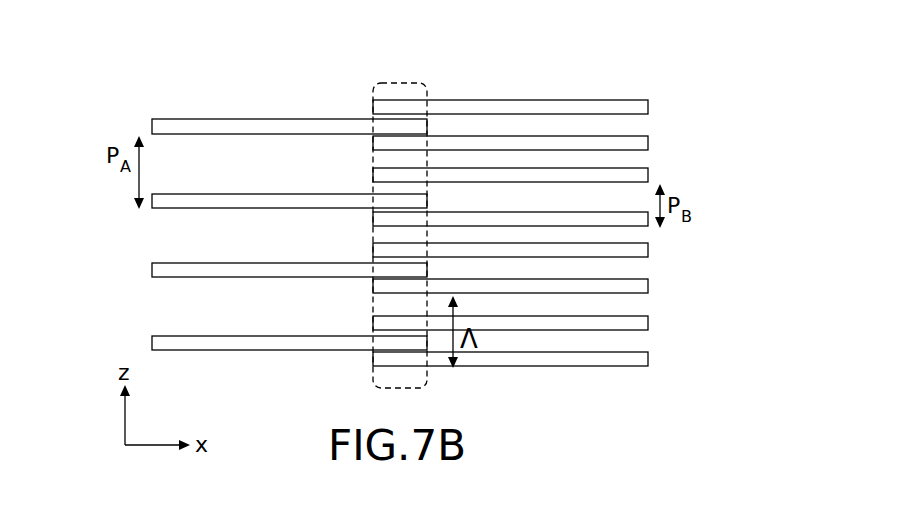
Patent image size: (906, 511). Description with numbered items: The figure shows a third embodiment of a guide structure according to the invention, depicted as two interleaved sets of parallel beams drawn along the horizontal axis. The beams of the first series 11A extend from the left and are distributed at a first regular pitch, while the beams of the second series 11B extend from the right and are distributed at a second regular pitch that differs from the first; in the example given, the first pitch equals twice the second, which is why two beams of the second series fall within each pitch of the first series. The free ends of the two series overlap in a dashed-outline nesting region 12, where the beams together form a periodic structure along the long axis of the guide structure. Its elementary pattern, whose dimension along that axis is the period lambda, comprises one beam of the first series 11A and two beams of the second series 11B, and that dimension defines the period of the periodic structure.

The first series of beams 11A is at (88, 120).
The second series of beams 11B is at (695, 100).
The nesting region 12 is at (427, 92).